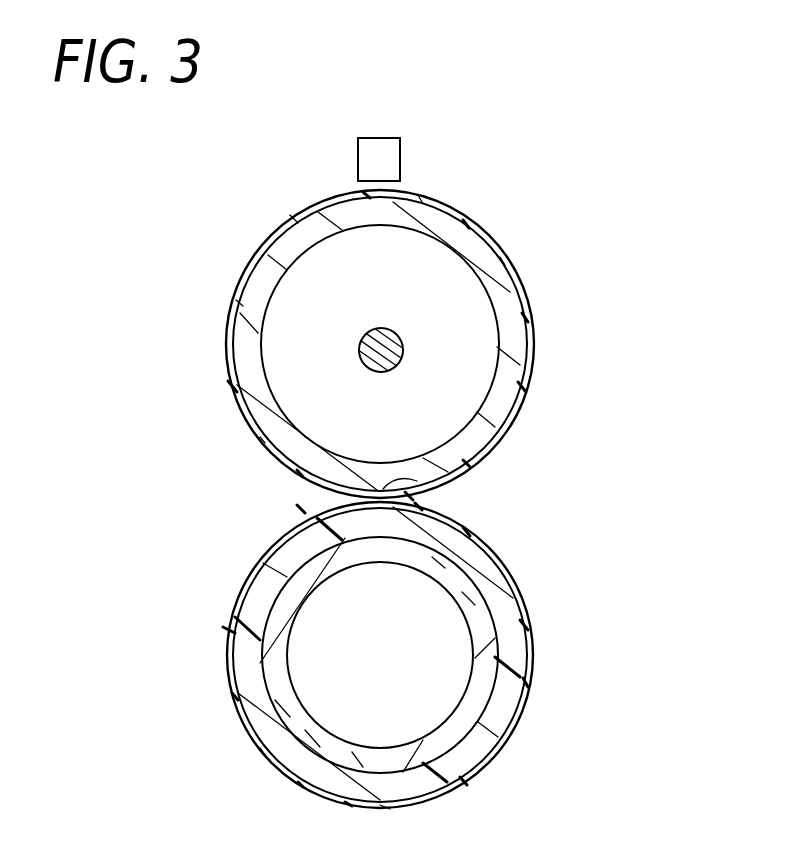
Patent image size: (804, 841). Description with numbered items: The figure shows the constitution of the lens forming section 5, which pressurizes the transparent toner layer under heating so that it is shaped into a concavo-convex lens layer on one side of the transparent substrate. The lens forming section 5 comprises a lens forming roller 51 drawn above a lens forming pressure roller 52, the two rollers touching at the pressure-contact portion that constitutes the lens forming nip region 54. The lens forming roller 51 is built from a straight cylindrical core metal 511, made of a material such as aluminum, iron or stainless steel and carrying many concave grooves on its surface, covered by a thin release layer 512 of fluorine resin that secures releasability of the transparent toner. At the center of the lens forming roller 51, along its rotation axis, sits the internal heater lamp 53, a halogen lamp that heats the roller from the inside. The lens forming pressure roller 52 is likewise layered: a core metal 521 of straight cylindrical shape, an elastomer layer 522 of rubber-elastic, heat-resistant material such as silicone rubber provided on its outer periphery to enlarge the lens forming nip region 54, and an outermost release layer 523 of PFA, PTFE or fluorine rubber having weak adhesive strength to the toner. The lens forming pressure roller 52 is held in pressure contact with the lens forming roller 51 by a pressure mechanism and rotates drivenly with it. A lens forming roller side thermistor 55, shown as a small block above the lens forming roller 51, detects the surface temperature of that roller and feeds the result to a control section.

The lens forming section 5 is at (580, 164).
The lens forming roller 51 is at (580, 276).
The lens forming pressure roller 52 is at (580, 579).
The internal heater lamp 53 is at (384, 341).
The lens forming nip region 54 is at (417, 481).
The lens forming roller side thermistor 55 is at (392, 158).
The core metal 511 is at (512, 338).
The release layer 512 is at (484, 234).
The core metal 521 is at (481, 685).
The elastomer layer 522 is at (513, 643).
The release layer 523 is at (484, 539).